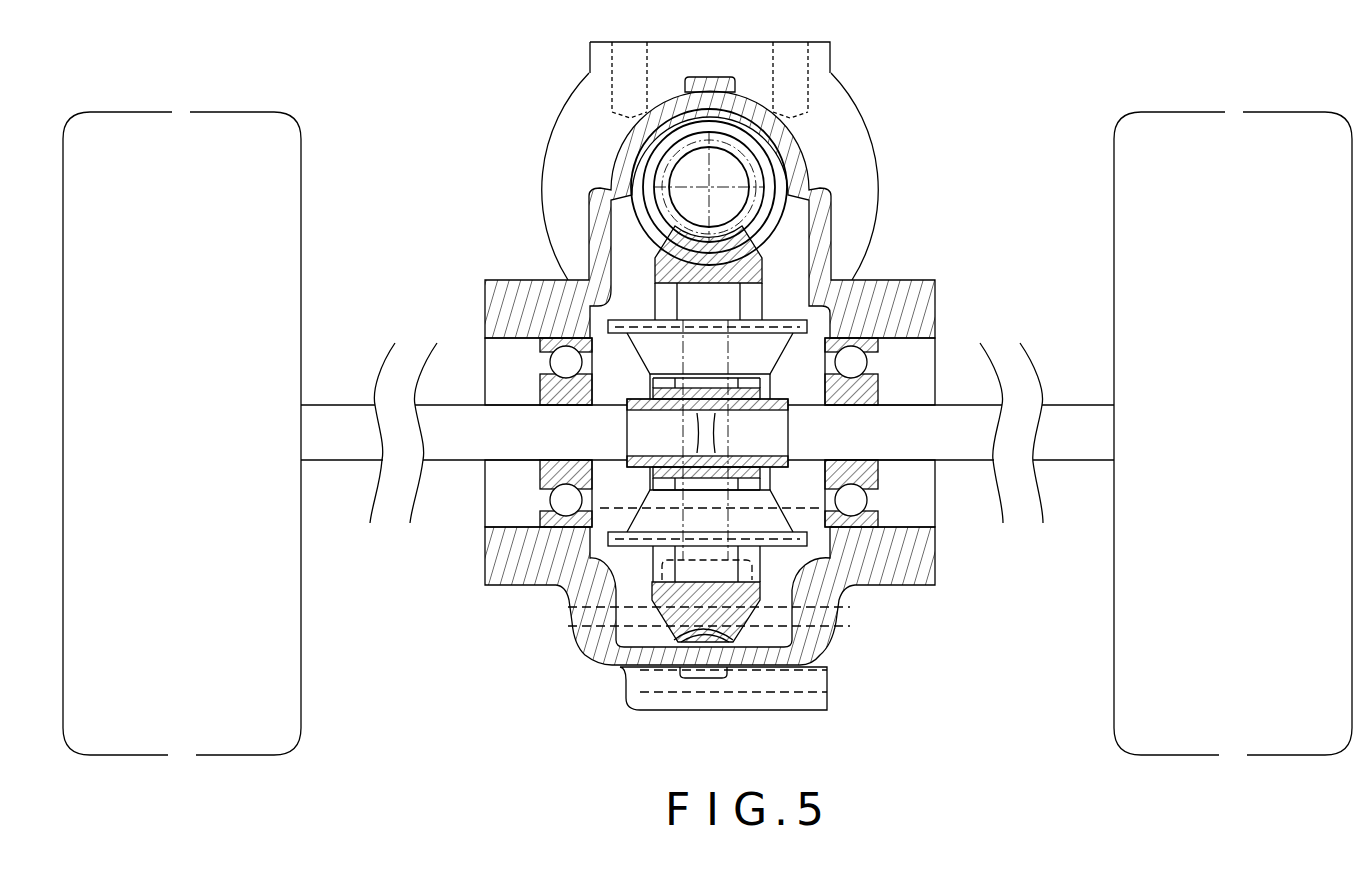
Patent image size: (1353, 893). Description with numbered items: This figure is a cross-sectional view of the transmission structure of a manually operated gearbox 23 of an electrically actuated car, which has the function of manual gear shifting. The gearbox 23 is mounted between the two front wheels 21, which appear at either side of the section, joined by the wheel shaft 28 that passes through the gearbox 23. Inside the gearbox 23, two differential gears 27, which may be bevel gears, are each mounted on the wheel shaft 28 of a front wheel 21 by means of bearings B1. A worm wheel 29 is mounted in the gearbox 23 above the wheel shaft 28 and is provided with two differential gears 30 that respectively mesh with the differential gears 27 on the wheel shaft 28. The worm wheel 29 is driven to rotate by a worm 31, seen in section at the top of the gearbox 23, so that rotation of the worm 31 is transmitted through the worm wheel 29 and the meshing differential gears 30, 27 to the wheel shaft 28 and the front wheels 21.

The front wheel 21 is at (181, 131).
The gearbox 23 is at (546, 280).
The differential gear 27 is at (549, 481).
The wheel shaft 28 is at (447, 416).
The worm wheel 29 is at (748, 258).
The differential gear 30 is at (643, 334).
The worm 31 is at (654, 178).
The bearing B1 is at (546, 392).